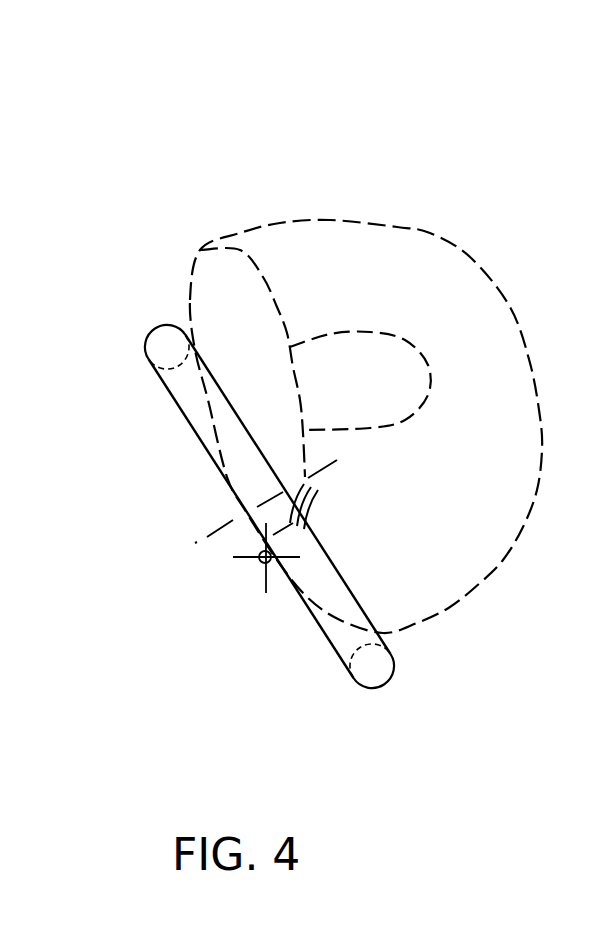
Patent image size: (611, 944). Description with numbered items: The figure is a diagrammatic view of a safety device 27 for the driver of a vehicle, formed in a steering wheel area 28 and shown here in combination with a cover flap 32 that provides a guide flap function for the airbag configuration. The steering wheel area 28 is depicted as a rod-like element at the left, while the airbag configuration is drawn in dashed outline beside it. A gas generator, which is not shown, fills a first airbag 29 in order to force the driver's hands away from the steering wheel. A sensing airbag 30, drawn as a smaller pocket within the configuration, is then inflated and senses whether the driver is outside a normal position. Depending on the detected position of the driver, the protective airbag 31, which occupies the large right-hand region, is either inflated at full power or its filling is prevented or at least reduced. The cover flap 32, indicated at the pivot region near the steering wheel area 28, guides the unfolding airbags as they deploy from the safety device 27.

The safety device 27 is at (508, 245).
The steering wheel area 28 is at (165, 379).
The first airbag 29 is at (249, 335).
The sensing airbag 30 is at (383, 397).
The protective airbag 31 is at (486, 480).
The cover flap 32 is at (314, 504).